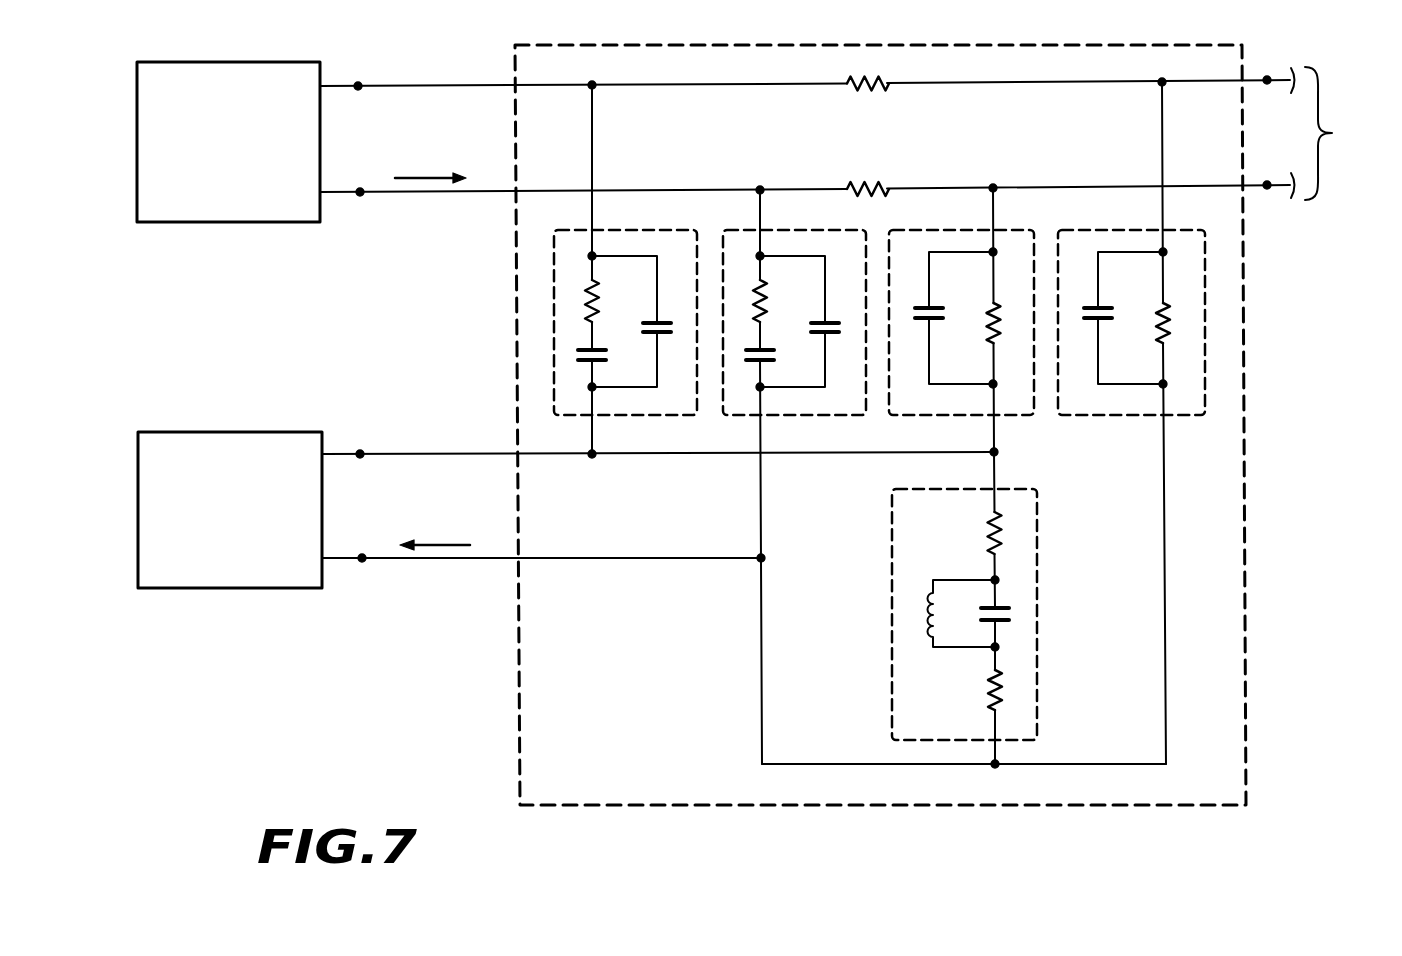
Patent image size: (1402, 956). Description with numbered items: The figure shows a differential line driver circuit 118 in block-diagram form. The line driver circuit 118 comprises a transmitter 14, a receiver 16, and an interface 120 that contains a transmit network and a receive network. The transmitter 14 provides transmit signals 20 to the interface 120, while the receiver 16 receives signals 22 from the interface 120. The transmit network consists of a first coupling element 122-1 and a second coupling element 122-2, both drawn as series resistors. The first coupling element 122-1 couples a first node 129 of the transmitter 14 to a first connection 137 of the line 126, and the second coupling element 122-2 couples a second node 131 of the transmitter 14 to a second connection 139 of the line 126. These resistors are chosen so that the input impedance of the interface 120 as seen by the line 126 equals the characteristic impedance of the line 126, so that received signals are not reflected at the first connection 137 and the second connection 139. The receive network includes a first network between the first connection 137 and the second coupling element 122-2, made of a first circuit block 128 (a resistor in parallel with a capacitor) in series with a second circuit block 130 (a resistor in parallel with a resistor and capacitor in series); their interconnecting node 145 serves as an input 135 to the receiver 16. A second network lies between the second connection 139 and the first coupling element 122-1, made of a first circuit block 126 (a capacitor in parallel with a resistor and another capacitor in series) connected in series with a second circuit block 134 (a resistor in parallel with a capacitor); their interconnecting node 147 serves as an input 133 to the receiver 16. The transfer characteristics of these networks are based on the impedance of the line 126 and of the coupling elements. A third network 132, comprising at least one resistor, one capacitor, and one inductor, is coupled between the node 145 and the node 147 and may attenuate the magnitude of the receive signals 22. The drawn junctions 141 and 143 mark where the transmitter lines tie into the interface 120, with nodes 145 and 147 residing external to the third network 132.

The transmitter 14 is at (277, 193).
The receiver 16 is at (282, 560).
The transmit signals 20 is at (435, 139).
The receive signals 22 is at (440, 507).
The line driver circuit 118 is at (380, 795).
The interface 120 is at (678, 755).
The first coupling element 122-1 is at (869, 91).
The second coupling element 122-2 is at (876, 187).
The line 126 is at (648, 417).
The first circuit block 128 is at (1115, 416).
The first node 129 is at (360, 72).
The second circuit block 130 is at (797, 417).
The second node 131 is at (360, 205).
The third network 132 is at (942, 488).
The input 133 is at (360, 441).
The second circuit block 134 is at (945, 416).
The input 135 is at (363, 573).
The first connection 137 is at (1273, 90).
The second connection 139 is at (1273, 195).
The node 141 is at (591, 167).
The node 143 is at (760, 219).
The interconnecting node 145 is at (999, 777).
The interconnecting node 147 is at (1014, 474).